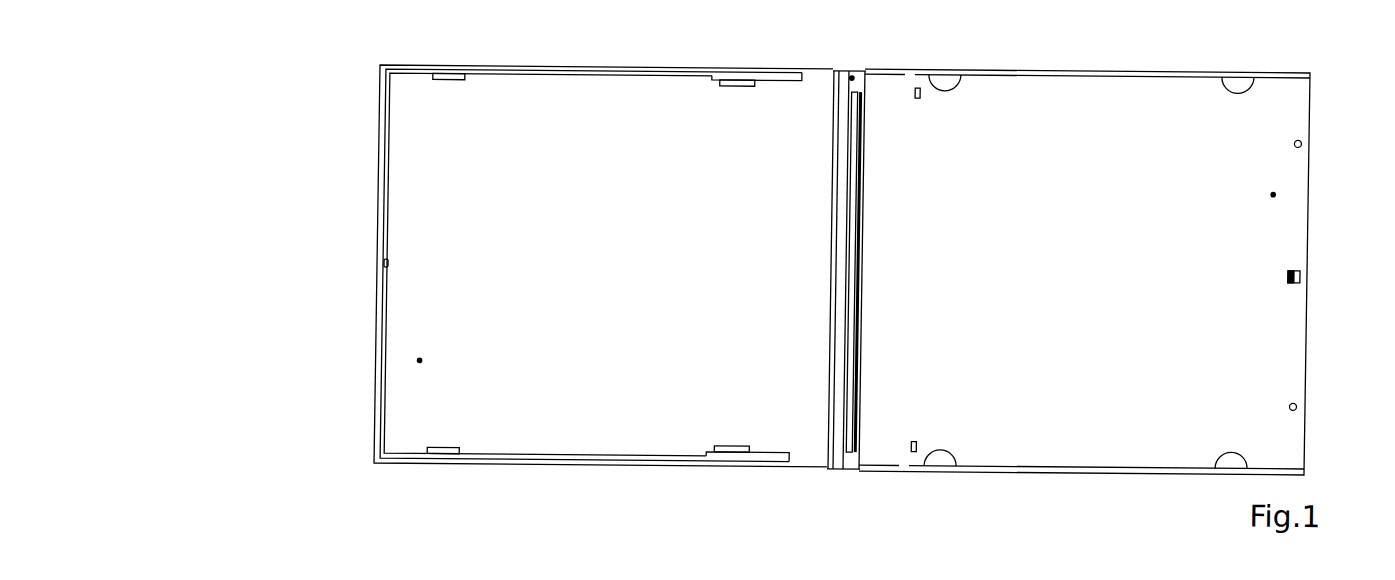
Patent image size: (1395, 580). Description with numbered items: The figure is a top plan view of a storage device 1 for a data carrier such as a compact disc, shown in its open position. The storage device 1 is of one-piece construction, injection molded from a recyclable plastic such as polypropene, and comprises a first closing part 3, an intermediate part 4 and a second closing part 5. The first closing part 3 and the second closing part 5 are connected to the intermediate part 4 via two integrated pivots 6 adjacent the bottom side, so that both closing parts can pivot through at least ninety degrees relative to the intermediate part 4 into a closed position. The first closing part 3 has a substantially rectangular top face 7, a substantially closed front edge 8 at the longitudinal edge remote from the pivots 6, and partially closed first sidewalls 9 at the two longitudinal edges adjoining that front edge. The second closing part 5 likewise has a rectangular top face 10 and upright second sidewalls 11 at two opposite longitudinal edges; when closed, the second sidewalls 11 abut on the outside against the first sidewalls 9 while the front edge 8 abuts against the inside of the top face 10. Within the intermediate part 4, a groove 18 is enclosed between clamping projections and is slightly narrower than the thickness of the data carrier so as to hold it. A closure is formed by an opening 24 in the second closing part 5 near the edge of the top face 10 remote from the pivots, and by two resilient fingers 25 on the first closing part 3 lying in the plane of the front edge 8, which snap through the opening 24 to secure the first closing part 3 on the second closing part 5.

The storage device 1 is at (828, 266).
The first closing part 3 is at (420, 360).
The intermediate part 4 is at (852, 71).
The second closing part 5 is at (1280, 186).
The integrated pivots 6 is at (834, 66).
The top face 7 is at (579, 271).
The front edge 8 is at (379, 163).
The first sidewalls 9 is at (590, 266).
The top face 10 is at (1128, 269).
The second sidewalls 11 is at (1094, 69).
The groove 18 is at (863, 292).
The opening 24 is at (1311, 267).
The resilient fingers 25 is at (366, 263).